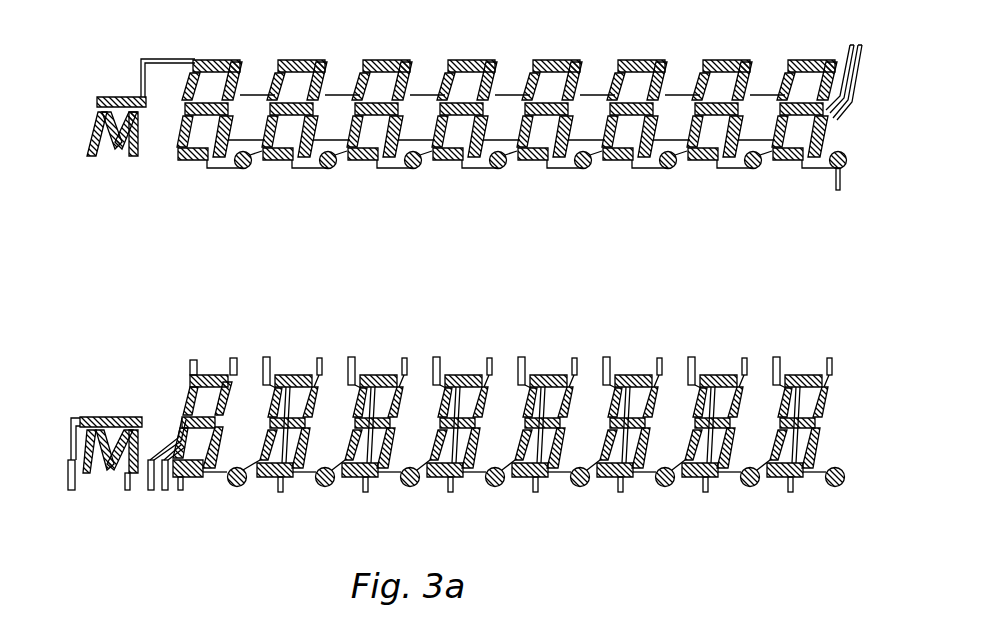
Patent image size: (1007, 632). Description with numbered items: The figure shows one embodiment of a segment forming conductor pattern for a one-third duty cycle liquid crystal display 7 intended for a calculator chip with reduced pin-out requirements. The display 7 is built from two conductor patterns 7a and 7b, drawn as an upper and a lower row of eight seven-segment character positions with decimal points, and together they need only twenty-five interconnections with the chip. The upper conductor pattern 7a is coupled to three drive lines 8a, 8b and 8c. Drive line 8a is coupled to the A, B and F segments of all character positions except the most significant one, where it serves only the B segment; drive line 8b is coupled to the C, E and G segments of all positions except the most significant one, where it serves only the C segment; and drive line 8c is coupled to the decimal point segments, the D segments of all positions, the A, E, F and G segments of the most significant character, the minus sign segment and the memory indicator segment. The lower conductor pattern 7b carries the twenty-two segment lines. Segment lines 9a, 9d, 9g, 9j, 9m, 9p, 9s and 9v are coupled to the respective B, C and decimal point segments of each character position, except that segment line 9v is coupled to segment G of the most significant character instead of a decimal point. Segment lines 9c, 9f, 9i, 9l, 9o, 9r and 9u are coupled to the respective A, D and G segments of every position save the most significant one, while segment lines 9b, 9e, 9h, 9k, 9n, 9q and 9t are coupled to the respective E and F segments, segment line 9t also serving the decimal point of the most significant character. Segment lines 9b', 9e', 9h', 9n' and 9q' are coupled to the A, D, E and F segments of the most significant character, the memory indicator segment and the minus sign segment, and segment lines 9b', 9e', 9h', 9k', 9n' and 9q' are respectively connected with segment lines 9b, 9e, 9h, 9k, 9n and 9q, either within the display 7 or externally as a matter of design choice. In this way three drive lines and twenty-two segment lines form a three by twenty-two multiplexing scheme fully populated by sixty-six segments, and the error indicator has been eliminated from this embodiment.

The liquid crystal display 7 is at (60, 270).
The conductor pattern 7a is at (40, 114).
The conductor pattern 7b is at (70, 436).
The drive line 8a is at (849, 48).
The drive line 8b is at (862, 50).
The drive line 8c is at (838, 190).
The segment line 9a is at (829, 358).
The segment line 9b is at (791, 349).
The segment line 9c is at (790, 492).
The segment line 9d is at (744, 358).
The segment line 9e is at (706, 349).
The segment line 9f is at (705, 492).
The segment line 9g is at (659, 358).
The segment line 9h is at (619, 349).
The segment line 9i is at (620, 492).
The segment line 9j is at (574, 358).
The segment line 9k is at (535, 349).
The segment line 9l is at (535, 492).
The segment line 9m is at (489, 358).
The segment line 9n is at (449, 349).
The segment line 9o is at (450, 492).
The segment line 9p is at (404, 358).
The segment line 9q is at (364, 349).
The segment line 9r is at (365, 492).
The segment line 9s is at (319, 358).
The segment line 9t is at (267, 357).
The segment line 9u is at (280, 492).
The segment line 9v is at (234, 358).
The segment line 9b' is at (199, 343).
The segment line 9e' is at (204, 508).
The segment line 9h' is at (169, 505).
The segment line 9k' is at (161, 478).
The segment line 9n' is at (117, 520).
The segment line 9q' is at (79, 499).